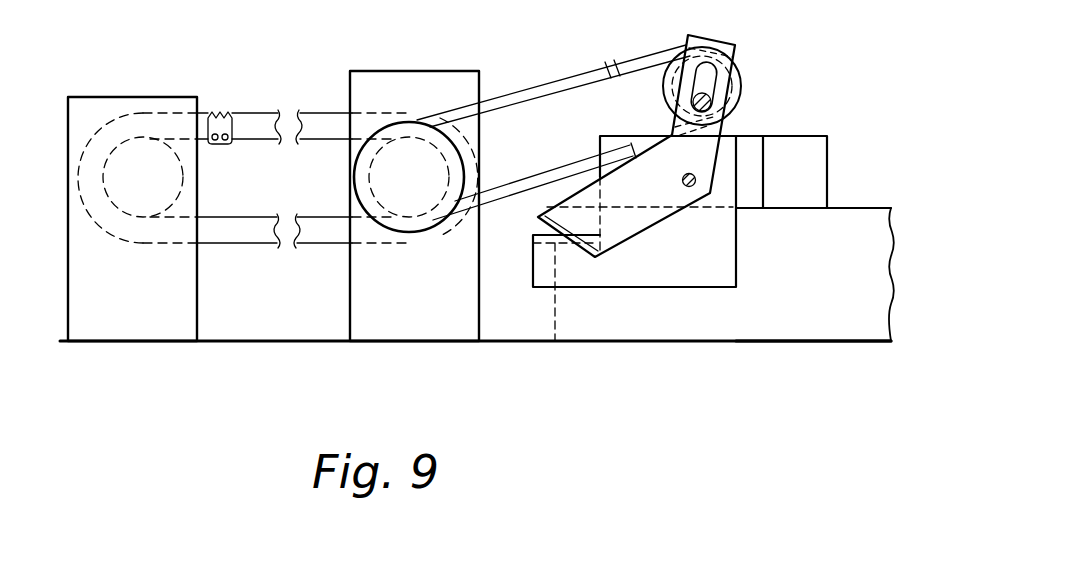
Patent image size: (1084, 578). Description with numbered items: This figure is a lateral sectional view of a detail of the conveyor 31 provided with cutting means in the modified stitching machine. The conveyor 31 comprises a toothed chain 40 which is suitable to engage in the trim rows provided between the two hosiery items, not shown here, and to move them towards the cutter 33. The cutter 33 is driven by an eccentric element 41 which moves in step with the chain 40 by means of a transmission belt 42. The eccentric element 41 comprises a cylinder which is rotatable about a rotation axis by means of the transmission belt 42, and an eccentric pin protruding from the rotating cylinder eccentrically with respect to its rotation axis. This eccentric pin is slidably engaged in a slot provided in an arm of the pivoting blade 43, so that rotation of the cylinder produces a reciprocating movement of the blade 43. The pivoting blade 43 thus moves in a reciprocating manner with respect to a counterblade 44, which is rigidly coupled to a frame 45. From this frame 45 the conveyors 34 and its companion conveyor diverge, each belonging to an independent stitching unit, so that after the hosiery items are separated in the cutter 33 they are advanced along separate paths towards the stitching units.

The conveyor 31 is at (220, 98).
The toothed chain 40 is at (268, 122).
The transmission belt 42 is at (533, 92).
The eccentric element 41 is at (741, 84).
The pivoting blade 43 is at (612, 236).
The cutter 33 is at (655, 248).
The counterblade 44 is at (569, 245).
The frame 45 is at (783, 197).
The conveyor 34 is at (801, 347).